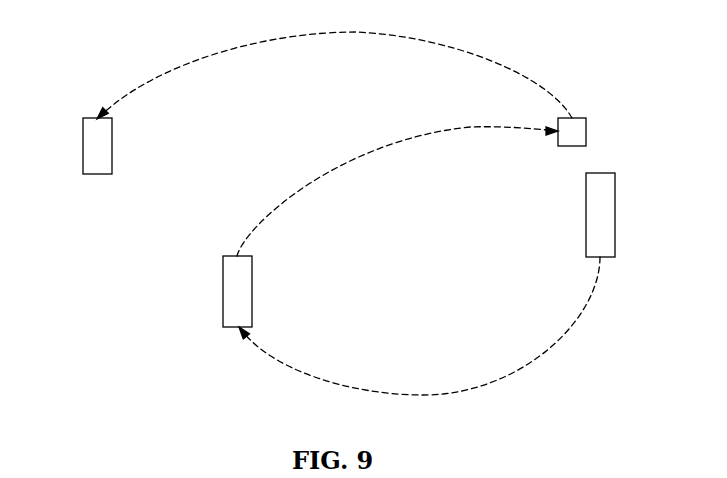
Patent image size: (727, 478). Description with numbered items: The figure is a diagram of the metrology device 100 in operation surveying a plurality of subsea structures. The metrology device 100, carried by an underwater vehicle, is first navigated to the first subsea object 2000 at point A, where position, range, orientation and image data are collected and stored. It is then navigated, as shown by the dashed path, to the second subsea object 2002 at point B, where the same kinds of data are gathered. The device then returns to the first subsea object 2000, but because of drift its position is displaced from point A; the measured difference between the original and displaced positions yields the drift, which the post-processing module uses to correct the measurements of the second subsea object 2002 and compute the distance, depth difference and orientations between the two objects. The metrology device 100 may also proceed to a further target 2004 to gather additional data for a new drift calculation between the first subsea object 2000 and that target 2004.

The target 2004 is at (83, 146).
The metrology device 100 is at (558, 146).
The first subsea object 2000 is at (615, 228).
The second subsea object 2002 is at (223, 313).
The point A is at (600, 123).
The point B is at (223, 290).